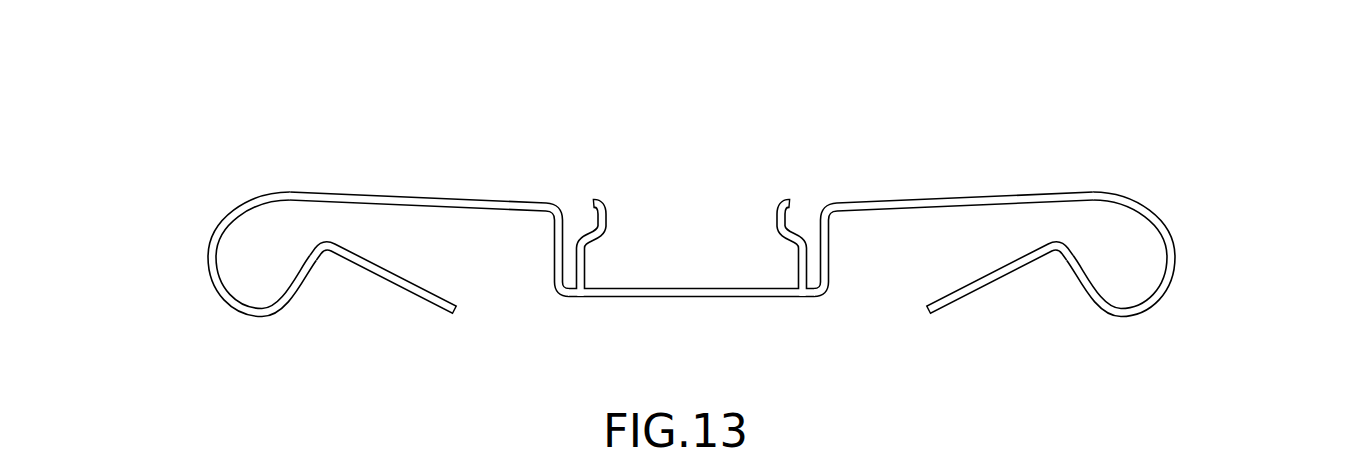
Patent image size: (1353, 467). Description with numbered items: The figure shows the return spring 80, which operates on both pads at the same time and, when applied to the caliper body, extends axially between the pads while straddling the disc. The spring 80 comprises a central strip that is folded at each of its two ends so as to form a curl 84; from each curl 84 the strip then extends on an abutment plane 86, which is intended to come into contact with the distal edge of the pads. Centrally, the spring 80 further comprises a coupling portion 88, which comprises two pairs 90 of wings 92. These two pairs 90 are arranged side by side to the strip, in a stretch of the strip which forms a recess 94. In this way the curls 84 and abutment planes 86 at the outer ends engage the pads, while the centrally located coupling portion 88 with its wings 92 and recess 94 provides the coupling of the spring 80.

The spring 80 is at (720, 222).
The curl 84 is at (206, 274).
The abutment plane 86 is at (402, 296).
The coupling portion 88 is at (691, 199).
The pair of wings 90 is at (833, 461).
The wing 92 is at (597, 228).
The recess 94 is at (671, 241).